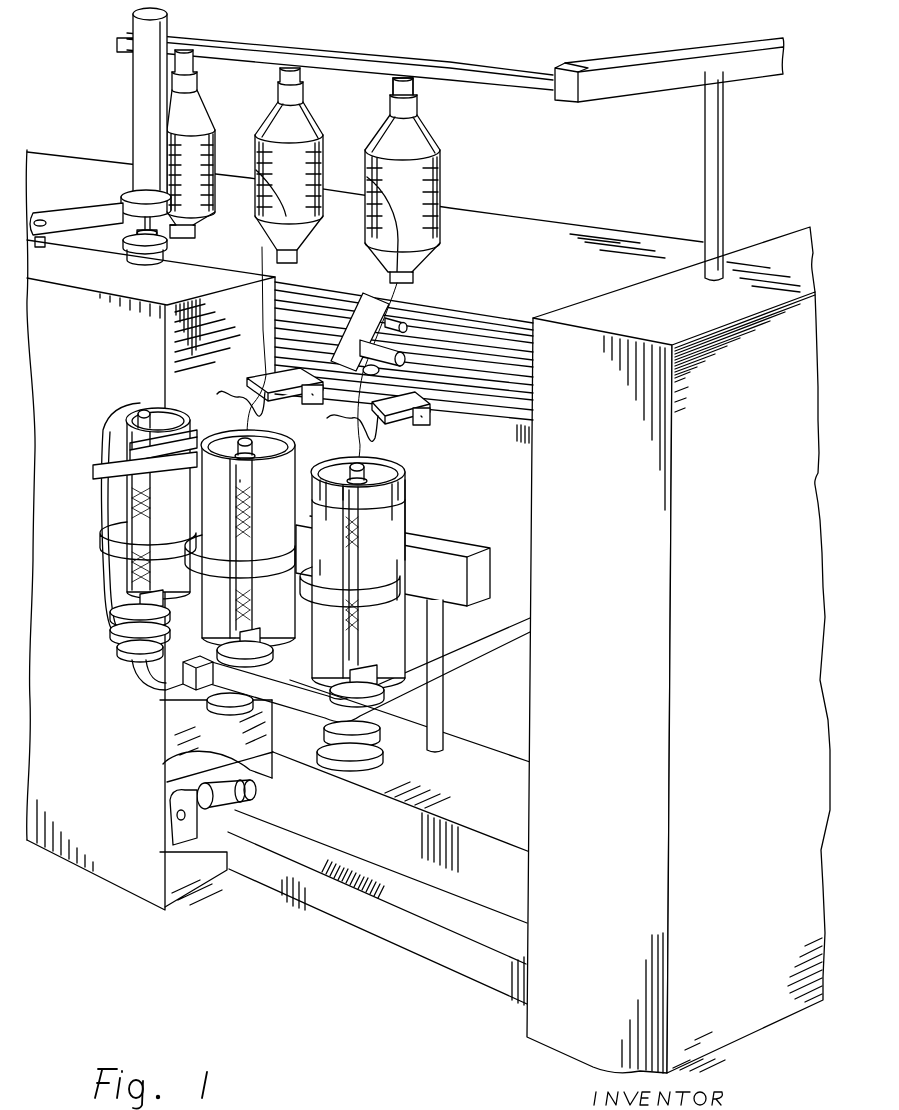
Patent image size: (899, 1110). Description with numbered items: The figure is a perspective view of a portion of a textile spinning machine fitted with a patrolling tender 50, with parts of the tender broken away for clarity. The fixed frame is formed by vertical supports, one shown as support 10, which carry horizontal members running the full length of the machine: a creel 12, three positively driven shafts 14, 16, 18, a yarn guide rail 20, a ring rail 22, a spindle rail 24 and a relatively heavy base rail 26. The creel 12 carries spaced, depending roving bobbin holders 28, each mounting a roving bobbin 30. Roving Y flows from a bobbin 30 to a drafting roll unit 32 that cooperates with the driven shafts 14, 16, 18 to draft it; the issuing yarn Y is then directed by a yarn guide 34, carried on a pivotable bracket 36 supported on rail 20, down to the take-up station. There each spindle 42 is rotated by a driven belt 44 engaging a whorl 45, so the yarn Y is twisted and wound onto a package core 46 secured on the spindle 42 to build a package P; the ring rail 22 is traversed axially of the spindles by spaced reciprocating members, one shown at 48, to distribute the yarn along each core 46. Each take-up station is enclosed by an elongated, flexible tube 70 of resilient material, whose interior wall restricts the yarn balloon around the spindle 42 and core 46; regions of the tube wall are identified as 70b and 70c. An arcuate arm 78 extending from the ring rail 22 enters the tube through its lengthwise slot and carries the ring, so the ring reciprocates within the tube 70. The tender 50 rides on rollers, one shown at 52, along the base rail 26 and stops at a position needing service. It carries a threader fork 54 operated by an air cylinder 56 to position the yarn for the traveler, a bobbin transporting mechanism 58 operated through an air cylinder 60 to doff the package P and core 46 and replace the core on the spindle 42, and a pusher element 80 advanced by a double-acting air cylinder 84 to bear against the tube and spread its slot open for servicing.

The vertical support 10 is at (752, 648).
The creel 12 is at (452, 66).
The positively driven shaft 14 is at (428, 335).
The positively driven shaft 16 is at (441, 358).
The positively driven shaft 18 is at (472, 380).
The yarn guide rail 20 is at (497, 430).
The ring rail 22 is at (435, 552).
The spindle rail 24 is at (468, 744).
The base rail 26 is at (301, 845).
The roving bobbin holder 28 is at (413, 88).
The roving bobbin 30 is at (441, 165).
The drafting roll unit 32 is at (318, 304).
The yarn guide 34 is at (250, 398).
The pivotable bracket 36 is at (288, 398).
The spindle 42 is at (350, 468).
The driven belt 44 is at (484, 655).
The whorl 45 is at (382, 742).
The package core 46 is at (384, 502).
The reciprocating member 48 is at (440, 705).
The patrolling tender 50 is at (110, 741).
The roller 52 is at (250, 794).
The threader fork 54 is at (190, 440).
The air cylinder 56 is at (95, 470).
The bobbin transporting mechanism 58 is at (113, 234).
The air cylinder 60 is at (133, 119).
The flexible sleeve or tube 70 is at (179, 527).
The tube wall 70b is at (395, 511).
The tube slot 70c is at (341, 470).
The arcuate arm 78 is at (115, 534).
The pusher element 80 is at (200, 683).
The double-acting air cylinder 84 is at (154, 688).
The package P is at (242, 528).
The roving or yarn Y is at (260, 243).